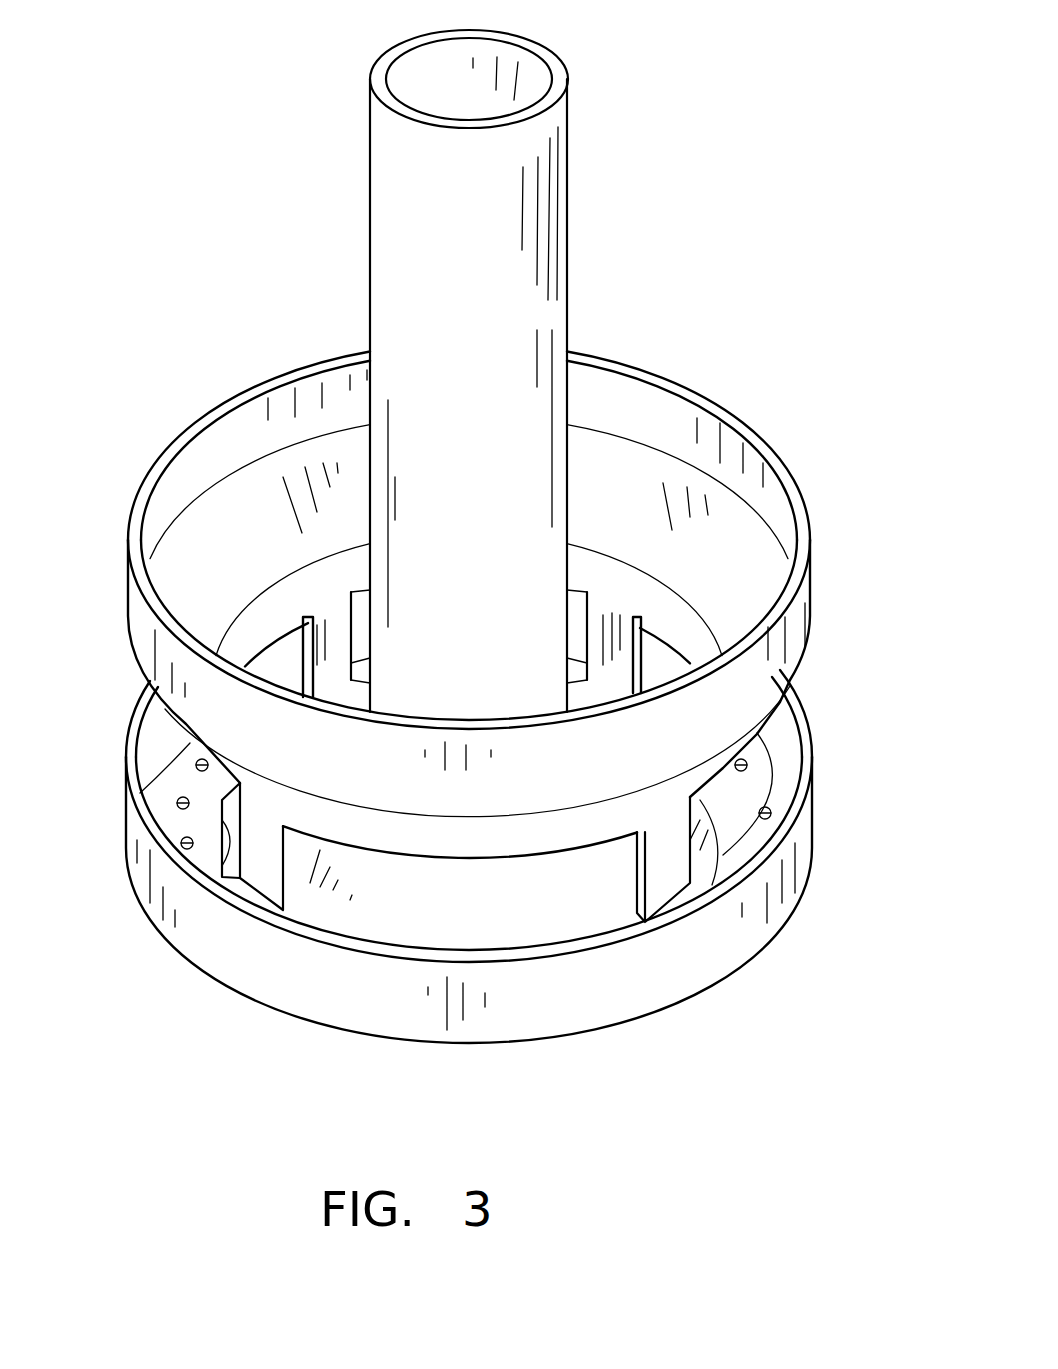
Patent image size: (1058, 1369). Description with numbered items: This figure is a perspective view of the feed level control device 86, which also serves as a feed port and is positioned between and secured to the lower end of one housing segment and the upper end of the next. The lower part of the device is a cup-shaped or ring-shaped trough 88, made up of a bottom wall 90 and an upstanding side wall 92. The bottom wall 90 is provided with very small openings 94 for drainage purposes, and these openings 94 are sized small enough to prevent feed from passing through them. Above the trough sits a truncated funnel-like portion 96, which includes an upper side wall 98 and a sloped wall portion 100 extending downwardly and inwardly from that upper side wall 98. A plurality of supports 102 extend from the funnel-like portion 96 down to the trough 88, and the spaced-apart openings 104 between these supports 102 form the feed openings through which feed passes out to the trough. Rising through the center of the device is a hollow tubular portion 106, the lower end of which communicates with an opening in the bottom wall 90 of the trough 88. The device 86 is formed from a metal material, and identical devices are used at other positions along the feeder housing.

The feed level control device 86 is at (706, 316).
The trough 88 is at (508, 1022).
The bottom wall 90 is at (577, 906).
The side wall 92 is at (627, 996).
The openings 94 is at (180, 845).
The truncated funnel-like portion 96 is at (745, 587).
The upper side wall 98 is at (750, 680).
The sloped wall portion 100 is at (235, 580).
The supports 102 is at (670, 863).
The openings 104 is at (585, 612).
The hollow tubular portion 106 is at (528, 304).